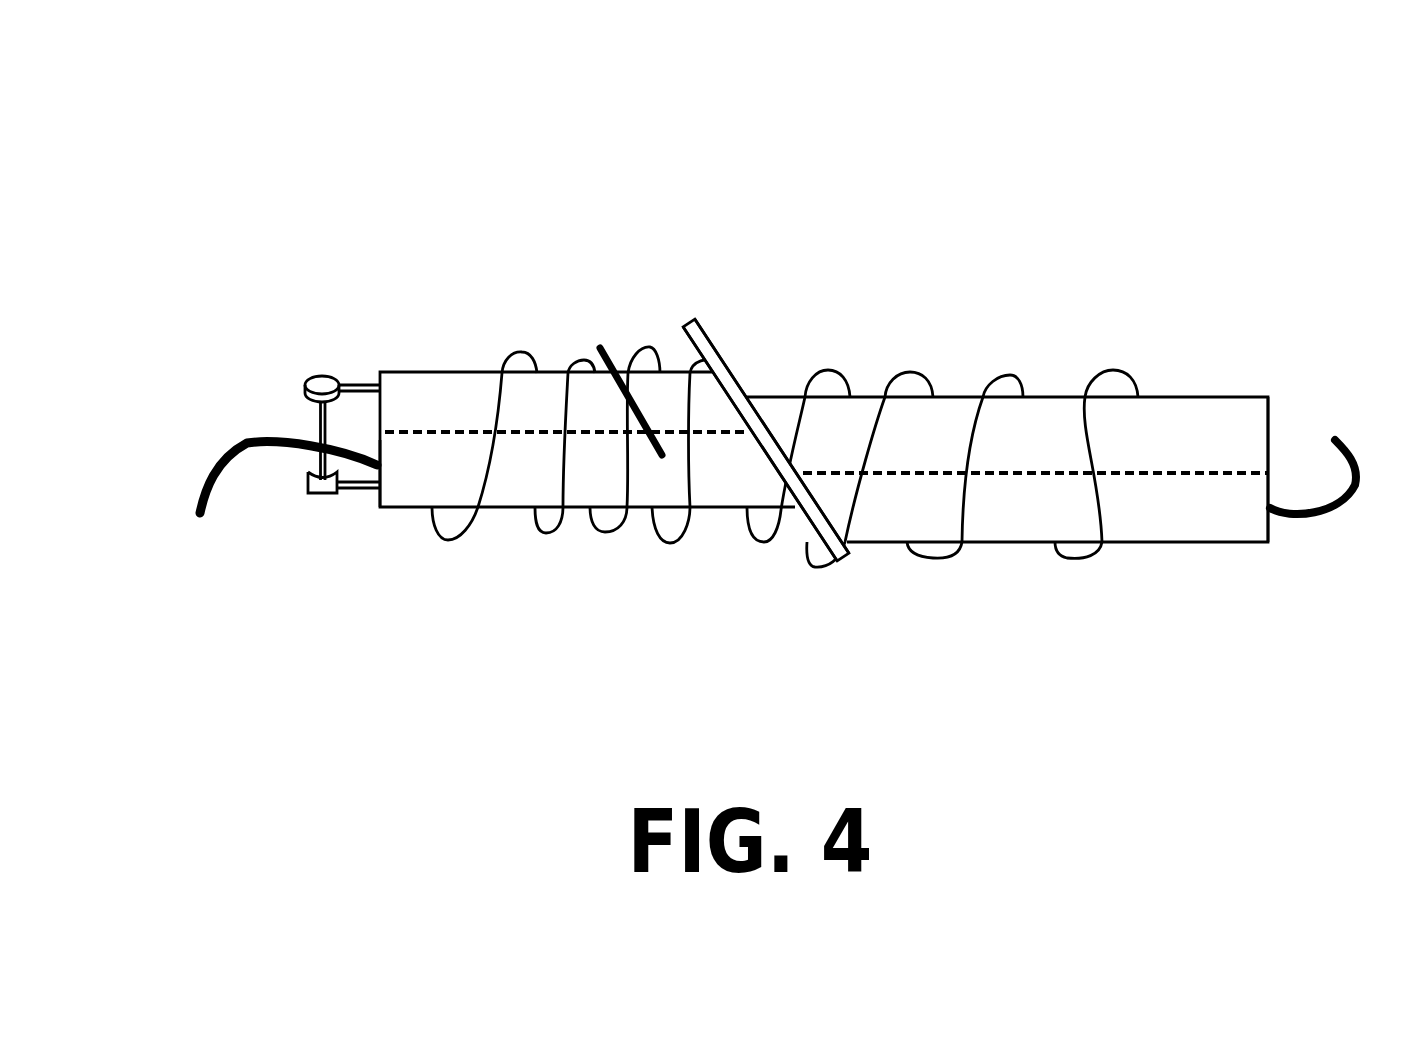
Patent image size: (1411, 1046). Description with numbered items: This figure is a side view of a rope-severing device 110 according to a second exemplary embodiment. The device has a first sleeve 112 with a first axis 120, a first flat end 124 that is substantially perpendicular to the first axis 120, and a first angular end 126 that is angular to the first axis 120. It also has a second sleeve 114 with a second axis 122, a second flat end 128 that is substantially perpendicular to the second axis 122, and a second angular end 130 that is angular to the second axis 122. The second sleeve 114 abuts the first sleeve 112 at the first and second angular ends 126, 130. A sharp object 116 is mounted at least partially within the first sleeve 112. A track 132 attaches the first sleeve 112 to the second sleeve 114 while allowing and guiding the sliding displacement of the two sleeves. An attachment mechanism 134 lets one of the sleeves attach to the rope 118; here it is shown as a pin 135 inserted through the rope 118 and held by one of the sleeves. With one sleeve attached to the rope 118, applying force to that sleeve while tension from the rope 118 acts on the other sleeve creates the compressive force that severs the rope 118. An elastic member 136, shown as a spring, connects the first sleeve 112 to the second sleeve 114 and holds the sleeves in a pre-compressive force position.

The rope-severing device 110 is at (1105, 232).
The first sleeve 112 is at (432, 372).
The second sleeve 114 is at (955, 395).
The sharp object 116 is at (615, 355).
The rope 118 is at (220, 463).
The first axis 120 is at (463, 435).
The second axis 122 is at (1150, 472).
The first flat end 124 is at (375, 500).
The first angular end 126 is at (767, 465).
The second flat end 128 is at (1273, 396).
The second angular end 130 is at (763, 410).
The track 132 is at (712, 330).
The attachment mechanism 134 is at (318, 375).
The pin 135 is at (317, 425).
The elastic member 136 is at (950, 562).